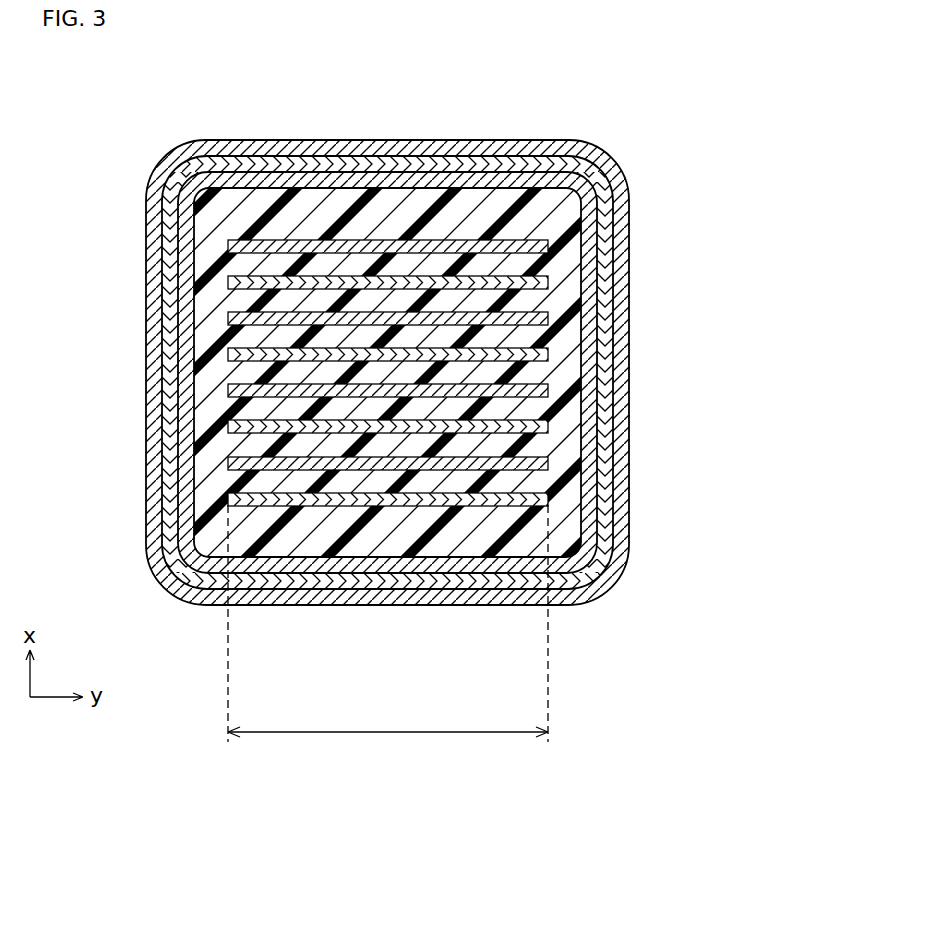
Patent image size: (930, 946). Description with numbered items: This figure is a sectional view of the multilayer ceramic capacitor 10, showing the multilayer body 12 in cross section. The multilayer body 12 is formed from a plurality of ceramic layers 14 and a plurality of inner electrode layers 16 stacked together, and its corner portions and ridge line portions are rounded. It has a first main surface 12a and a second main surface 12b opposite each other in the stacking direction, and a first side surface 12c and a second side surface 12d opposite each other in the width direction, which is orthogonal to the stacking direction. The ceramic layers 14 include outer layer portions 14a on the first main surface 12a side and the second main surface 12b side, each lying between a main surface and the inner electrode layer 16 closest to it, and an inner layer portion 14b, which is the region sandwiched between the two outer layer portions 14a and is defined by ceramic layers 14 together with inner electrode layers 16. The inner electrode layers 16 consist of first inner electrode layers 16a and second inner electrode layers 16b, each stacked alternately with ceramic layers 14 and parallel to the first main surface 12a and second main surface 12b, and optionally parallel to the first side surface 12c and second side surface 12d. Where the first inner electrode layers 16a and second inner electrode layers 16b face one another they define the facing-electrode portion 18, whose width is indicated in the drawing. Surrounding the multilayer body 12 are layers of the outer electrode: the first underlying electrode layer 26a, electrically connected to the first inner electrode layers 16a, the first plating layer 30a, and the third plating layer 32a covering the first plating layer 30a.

The electricity storage device 10 is at (130, 118).
The multilayer body 12 is at (390, 370).
The first main surface 12a is at (467, 192).
The second main surface 12b is at (493, 558).
The first side surface 12c is at (195, 340).
The second side surface 12d is at (580, 392).
The ceramic layers 14 is at (465, 375).
The outer layer portions 14a is at (295, 210).
The inner layer portion 14b is at (387, 330).
The inner electrode layers 16 is at (386, 566).
The first inner electrode layers 16a is at (235, 320).
The second inner electrode layers 16b is at (537, 350).
The facing-electrode portion 18 is at (388, 639).
The first underlying electrode layer 26a is at (590, 226).
The first plating layer 30a is at (605, 255).
The third plating layer 32a is at (622, 287).